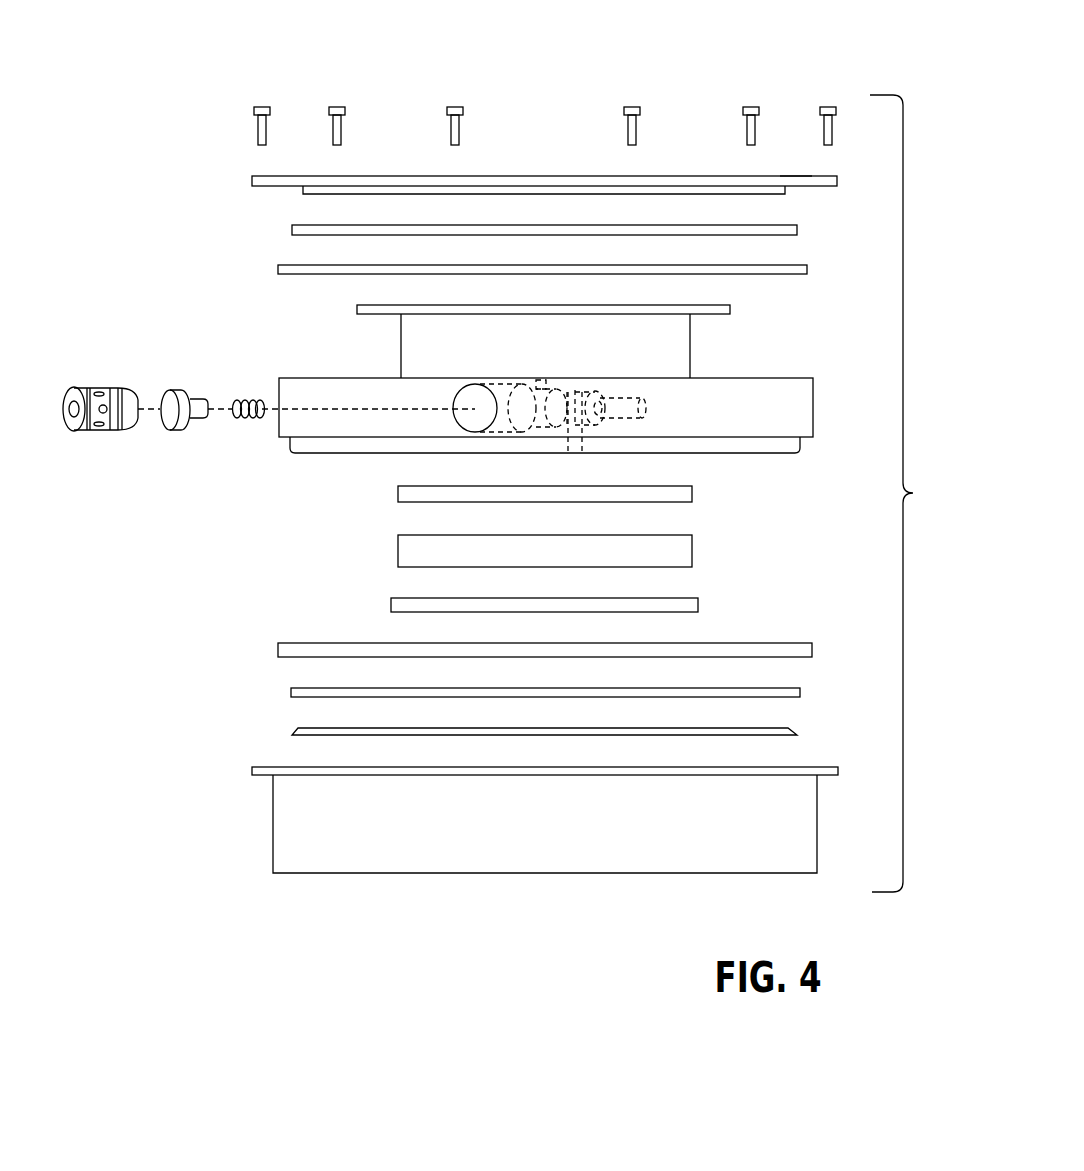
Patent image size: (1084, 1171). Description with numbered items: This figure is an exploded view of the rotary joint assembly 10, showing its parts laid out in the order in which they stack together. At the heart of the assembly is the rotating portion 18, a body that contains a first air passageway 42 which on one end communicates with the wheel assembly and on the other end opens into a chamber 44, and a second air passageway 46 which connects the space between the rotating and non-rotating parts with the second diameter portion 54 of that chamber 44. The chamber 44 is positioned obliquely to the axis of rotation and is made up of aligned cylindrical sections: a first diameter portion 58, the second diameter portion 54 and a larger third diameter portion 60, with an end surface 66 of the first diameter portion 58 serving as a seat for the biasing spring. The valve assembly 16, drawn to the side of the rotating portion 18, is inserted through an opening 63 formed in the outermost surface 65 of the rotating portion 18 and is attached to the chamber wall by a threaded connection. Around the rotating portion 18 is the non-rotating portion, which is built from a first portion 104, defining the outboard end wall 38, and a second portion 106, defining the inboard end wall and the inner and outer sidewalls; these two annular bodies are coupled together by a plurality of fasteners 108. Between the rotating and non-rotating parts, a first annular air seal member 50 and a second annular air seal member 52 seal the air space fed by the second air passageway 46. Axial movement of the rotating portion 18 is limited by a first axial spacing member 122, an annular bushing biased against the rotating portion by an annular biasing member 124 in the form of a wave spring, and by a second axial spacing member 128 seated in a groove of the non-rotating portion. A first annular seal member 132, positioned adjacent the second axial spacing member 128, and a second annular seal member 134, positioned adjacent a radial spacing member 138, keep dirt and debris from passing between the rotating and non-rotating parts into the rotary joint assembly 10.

The rotary joint assembly 10 is at (906, 493).
The valve assembly 16 is at (60, 382).
The rotating portion 18 is at (813, 378).
The outboard end wall 38 is at (796, 177).
The first air passageway 42 is at (540, 380).
The chamber 44 is at (572, 388).
The second air passageway 46 is at (584, 442).
The first annular air seal member 50 is at (698, 611).
The second annular air seal member 52 is at (812, 650).
The second diameter portion 54 is at (590, 395).
The first diameter portion 58 is at (622, 398).
The third diameter portion 60 is at (503, 380).
The opening 63 is at (452, 422).
The outermost surface 65 is at (443, 391).
The end surface 66 is at (645, 405).
The first portion 104 is at (545, 177).
The second portion 106 is at (817, 822).
The fasteners 108 is at (333, 130).
The first axial spacing member 122 is at (800, 692).
The annular biasing member 124 is at (795, 731).
The second axial spacing member 128 is at (807, 270).
The first annular seal member 132 is at (797, 230).
The second annular seal member 134 is at (692, 494).
The radial spacing member 138 is at (692, 550).